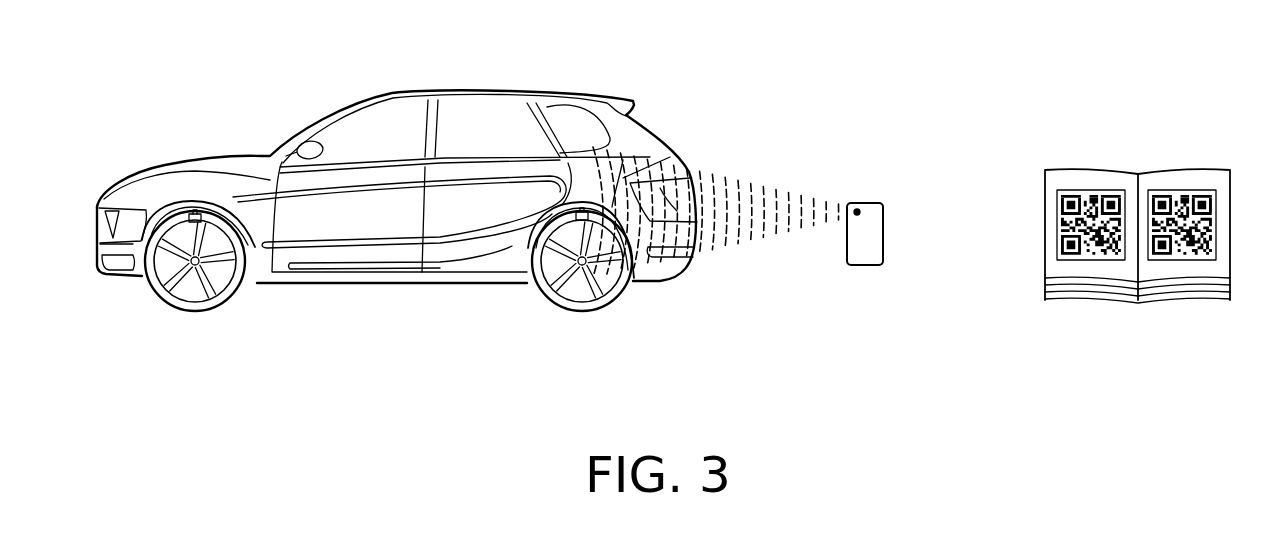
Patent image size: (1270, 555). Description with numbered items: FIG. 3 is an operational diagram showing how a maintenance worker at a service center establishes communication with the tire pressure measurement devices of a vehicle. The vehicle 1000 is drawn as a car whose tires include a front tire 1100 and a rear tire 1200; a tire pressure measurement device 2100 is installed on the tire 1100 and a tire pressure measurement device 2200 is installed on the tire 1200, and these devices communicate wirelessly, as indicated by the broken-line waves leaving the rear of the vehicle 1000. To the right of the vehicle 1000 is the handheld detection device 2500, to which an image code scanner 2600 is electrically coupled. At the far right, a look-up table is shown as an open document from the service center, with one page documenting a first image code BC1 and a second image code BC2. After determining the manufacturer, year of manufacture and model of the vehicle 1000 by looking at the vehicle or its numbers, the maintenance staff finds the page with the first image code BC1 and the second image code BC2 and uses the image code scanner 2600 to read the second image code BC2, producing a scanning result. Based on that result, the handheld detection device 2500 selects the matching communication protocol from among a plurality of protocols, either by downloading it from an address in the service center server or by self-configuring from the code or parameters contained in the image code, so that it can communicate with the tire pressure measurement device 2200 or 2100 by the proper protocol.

The vehicle 1000 is at (338, 101).
The tire 1100 is at (163, 294).
The tire 1200 is at (622, 293).
The tire pressure measurement device 2100 is at (195, 214).
The tire pressure measurement device 2200 is at (582, 212).
The handheld detection device 2500 is at (876, 213).
The image code scanner 2600 is at (857, 210).
The first image code BC1 is at (1082, 190).
The second image code BC2 is at (1192, 190).